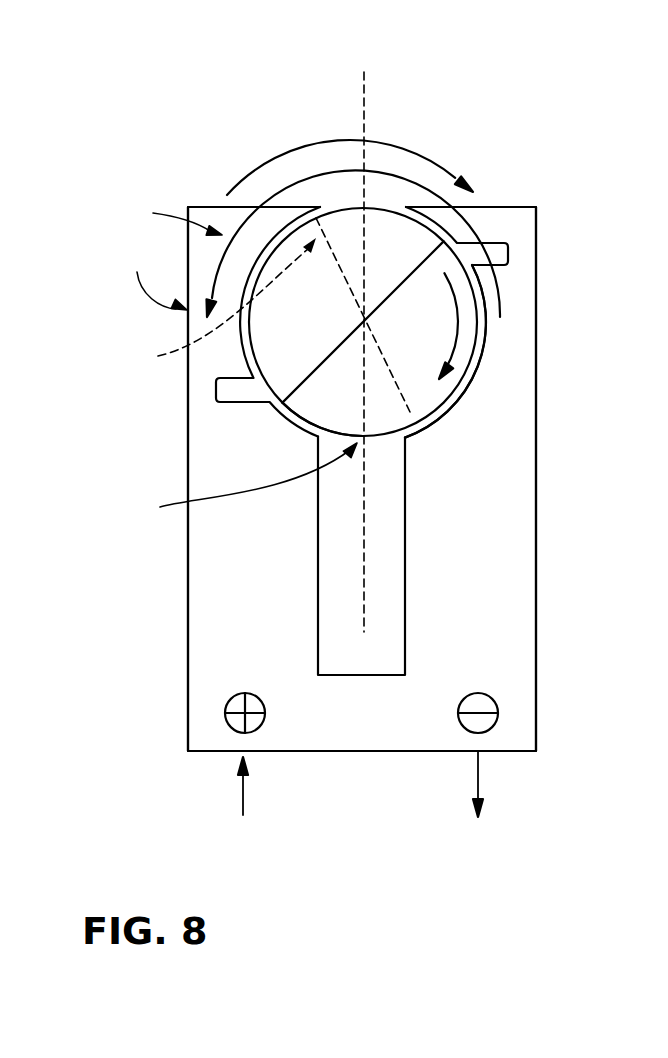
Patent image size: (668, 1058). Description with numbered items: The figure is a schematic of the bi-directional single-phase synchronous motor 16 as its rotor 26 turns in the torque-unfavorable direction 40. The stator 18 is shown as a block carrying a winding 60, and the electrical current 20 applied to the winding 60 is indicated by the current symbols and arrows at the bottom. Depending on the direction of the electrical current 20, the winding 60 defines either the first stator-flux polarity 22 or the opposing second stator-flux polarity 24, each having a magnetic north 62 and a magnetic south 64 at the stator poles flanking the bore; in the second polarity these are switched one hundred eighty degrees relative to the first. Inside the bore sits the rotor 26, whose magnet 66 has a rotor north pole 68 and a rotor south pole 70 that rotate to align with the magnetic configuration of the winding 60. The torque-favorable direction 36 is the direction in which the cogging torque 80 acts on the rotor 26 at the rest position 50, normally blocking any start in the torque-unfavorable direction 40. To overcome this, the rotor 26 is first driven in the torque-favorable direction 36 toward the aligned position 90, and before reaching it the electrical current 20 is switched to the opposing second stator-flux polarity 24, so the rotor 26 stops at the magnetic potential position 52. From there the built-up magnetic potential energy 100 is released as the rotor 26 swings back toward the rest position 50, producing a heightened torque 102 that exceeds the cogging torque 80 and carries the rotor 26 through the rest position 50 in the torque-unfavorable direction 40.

The single-phase synchronous motor 16 is at (152, 545).
The stator 18 is at (220, 644).
The electrical current 20 is at (242, 798).
The first stator-flux polarity 22 is at (466, 323).
The opposing second stator-flux polarity 24 is at (172, 218).
The rotor 26 is at (242, 482).
The torque-favorable direction 36 is at (460, 338).
The torque-unfavorable direction 40 is at (448, 205).
The rest position 50 is at (300, 373).
The magnetic potential position 52 is at (219, 305).
The winding 60 is at (151, 279).
The magnetic north 62 is at (232, 570).
The magnetic south 64 is at (492, 597).
The magnet 66 is at (327, 390).
The rotor north pole 68 is at (392, 437).
The rotor south pole 70 is at (403, 247).
The cogging torque 80 is at (306, 147).
The aligned position 90 is at (365, 123).
The built-up magnetic potential energy 100 is at (420, 407).
The heightened torque 102 is at (502, 292).